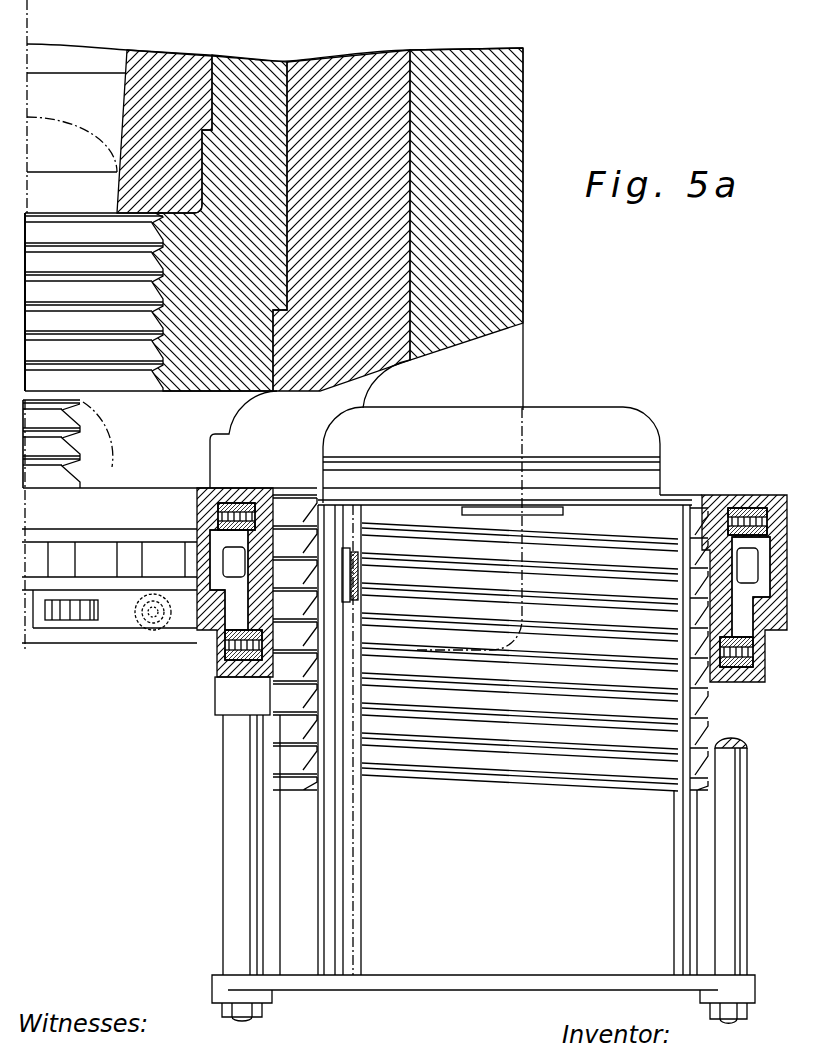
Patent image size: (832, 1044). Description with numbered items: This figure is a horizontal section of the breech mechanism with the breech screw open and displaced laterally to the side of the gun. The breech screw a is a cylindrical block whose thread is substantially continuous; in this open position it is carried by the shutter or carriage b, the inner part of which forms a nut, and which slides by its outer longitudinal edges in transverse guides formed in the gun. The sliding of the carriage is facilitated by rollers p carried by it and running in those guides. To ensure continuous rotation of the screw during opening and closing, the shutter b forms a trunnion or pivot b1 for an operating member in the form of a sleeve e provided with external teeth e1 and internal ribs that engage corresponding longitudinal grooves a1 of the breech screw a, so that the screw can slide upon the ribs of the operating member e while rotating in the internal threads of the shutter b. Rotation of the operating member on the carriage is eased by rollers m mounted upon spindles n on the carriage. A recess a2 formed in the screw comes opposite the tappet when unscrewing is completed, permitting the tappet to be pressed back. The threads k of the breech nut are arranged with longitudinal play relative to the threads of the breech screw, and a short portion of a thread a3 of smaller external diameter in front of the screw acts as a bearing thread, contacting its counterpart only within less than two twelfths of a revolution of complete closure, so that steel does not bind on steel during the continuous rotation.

The breech screw a is at (504, 943).
The longitudinal grooves a1 is at (682, 722).
The recess a2 is at (347, 563).
The portion of a thread a3 is at (532, 512).
The shutter or carriage b is at (729, 509).
The trunnion or pivot b1 is at (272, 552).
The operating member or sleeve e is at (262, 603).
The external teeth e1 is at (232, 556).
The threads of the breech nut k is at (68, 262).
The rollers m is at (232, 505).
The spindles n is at (241, 505).
The rollers p is at (50, 620).